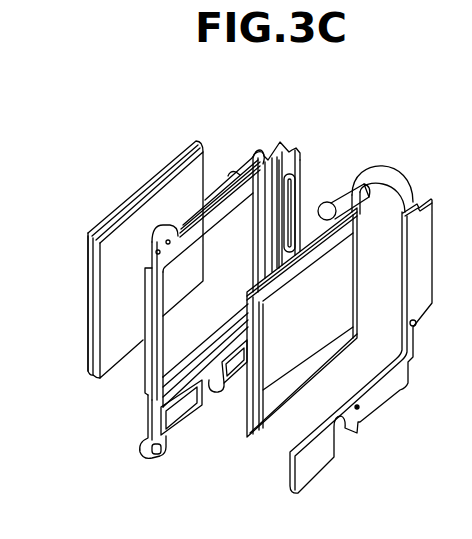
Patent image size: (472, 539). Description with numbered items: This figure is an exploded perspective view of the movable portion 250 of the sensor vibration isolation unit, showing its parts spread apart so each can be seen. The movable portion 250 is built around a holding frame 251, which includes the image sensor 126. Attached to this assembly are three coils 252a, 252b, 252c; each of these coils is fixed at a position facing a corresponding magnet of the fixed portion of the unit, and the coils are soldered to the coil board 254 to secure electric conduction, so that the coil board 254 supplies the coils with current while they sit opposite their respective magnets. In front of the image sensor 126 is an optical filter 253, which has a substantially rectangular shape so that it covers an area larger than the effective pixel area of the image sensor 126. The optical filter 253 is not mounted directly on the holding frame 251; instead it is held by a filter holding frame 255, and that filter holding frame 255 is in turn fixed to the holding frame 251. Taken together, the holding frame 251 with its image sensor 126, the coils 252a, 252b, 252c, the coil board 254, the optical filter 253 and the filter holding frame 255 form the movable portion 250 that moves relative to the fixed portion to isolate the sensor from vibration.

The image sensor 126 is at (72, 270).
The movable portion 250 is at (138, 150).
The holding frame 251 is at (228, 173).
The coil 252a is at (304, 180).
The coil 252b is at (240, 394).
The coil 252c is at (173, 440).
The optical filter 253 is at (292, 358).
The coil board 254 is at (424, 233).
The filter holding frame 255 is at (343, 200).